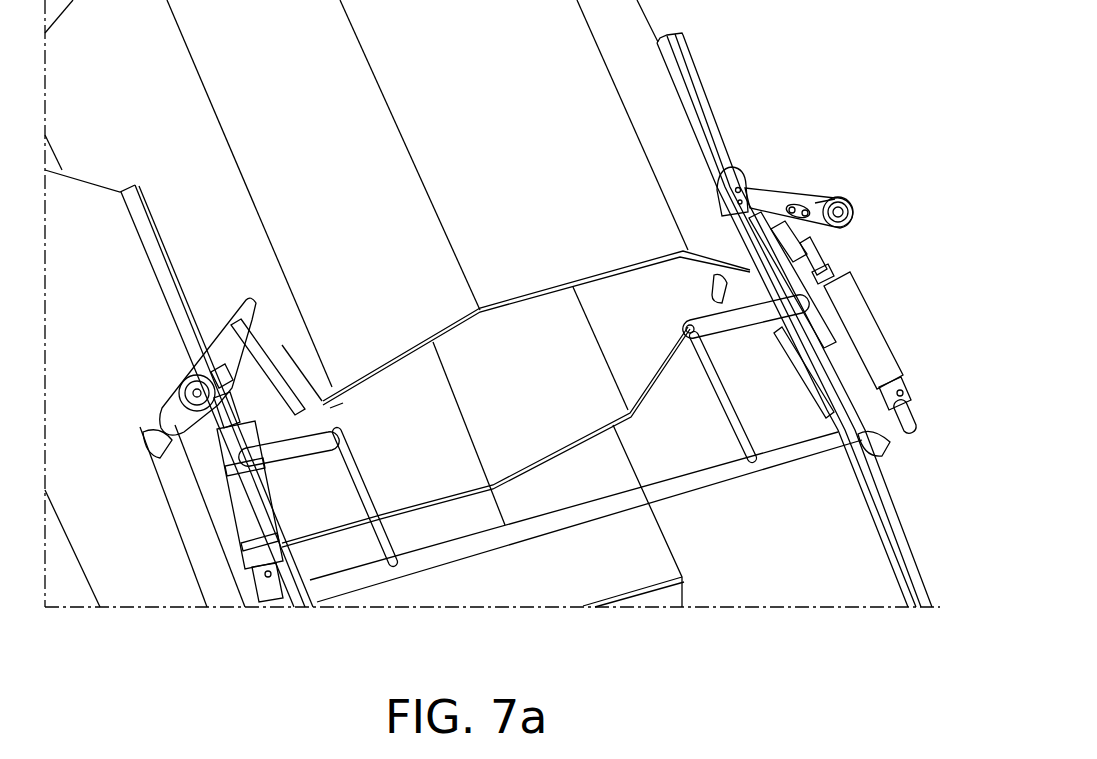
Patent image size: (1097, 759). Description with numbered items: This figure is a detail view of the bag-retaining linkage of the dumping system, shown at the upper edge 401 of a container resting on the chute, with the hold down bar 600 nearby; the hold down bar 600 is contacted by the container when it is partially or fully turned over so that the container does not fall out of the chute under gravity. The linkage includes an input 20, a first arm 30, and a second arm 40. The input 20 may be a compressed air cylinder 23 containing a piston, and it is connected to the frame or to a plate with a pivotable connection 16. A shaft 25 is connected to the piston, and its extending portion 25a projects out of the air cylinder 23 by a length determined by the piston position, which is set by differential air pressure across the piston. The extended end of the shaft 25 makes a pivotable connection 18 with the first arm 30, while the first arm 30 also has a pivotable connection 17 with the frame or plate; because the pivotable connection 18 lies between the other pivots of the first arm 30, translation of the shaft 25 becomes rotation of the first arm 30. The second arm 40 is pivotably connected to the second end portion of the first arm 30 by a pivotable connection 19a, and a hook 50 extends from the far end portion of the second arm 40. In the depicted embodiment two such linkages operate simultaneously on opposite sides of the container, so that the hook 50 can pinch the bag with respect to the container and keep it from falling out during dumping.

The pivotable connection 16 is at (900, 388).
The pivotable connection 17 is at (860, 208).
The pivotable connection 18 is at (817, 197).
The pivotable connection 19a is at (740, 182).
The input 20 is at (556, 419).
The compressed air cylinder 23 is at (857, 337).
The shaft 25 is at (193, 463).
The extending portion of the shaft 25a is at (848, 255).
The first arm 30 is at (220, 357).
The second arm 40 is at (288, 348).
The hook 50 is at (682, 250).
The upper edge of the container 401 is at (520, 298).
The hold down bar 600 is at (300, 446).